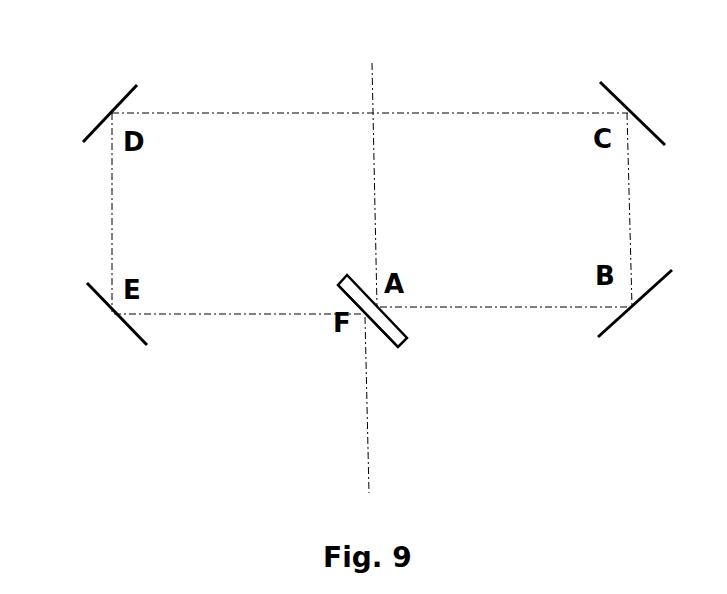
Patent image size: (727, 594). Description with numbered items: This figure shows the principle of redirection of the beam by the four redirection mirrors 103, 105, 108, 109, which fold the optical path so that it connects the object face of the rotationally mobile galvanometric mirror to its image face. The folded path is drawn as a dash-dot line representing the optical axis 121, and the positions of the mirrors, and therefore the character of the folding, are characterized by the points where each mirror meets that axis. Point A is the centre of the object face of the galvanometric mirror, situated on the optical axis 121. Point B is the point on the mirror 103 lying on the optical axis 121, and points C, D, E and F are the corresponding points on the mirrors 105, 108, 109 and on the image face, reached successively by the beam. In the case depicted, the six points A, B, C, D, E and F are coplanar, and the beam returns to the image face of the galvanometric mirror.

The redirection mirror 103 is at (592, 328).
The redirection mirror 105 is at (594, 86).
The redirection mirror 108 is at (85, 94).
The redirection mirror 109 is at (95, 331).
The optical axis 121 is at (323, 171).